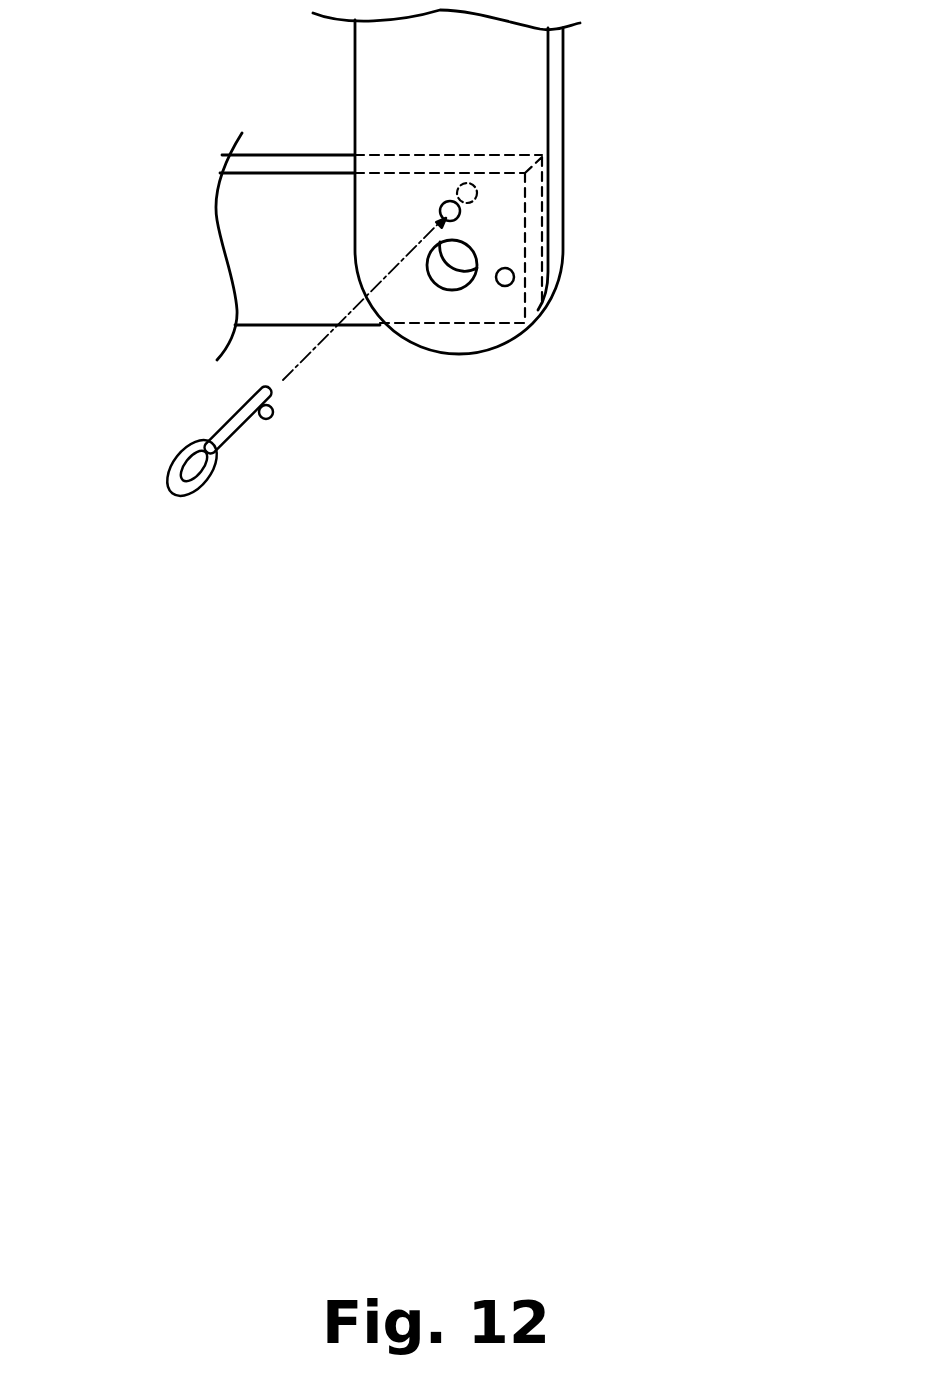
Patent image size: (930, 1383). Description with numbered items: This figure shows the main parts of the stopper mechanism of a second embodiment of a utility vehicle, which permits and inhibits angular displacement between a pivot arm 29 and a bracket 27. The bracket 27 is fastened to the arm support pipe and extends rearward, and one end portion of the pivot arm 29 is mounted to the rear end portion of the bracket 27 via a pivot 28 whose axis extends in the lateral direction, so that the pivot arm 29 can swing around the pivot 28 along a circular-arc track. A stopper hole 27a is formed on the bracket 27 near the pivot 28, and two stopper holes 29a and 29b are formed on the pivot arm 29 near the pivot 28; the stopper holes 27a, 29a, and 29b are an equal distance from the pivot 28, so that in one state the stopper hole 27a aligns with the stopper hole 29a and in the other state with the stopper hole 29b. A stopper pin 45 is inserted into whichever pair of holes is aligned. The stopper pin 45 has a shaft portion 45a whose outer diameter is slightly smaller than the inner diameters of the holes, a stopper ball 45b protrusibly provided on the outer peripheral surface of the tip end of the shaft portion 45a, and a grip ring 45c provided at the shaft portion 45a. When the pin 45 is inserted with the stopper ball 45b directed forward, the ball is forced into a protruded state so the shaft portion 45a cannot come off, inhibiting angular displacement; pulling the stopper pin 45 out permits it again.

The bracket 27 is at (260, 248).
The stopper hole 27a is at (477, 190).
The pivot 28 is at (450, 278).
The pivot arm 29 is at (563, 87).
The stopper hole 29a is at (444, 204).
The stopper hole 29b is at (512, 284).
The stopper pin 45 is at (170, 450).
The shaft portion 45a is at (235, 430).
The stopper ball 45b is at (272, 418).
The grip ring 45c is at (178, 502).